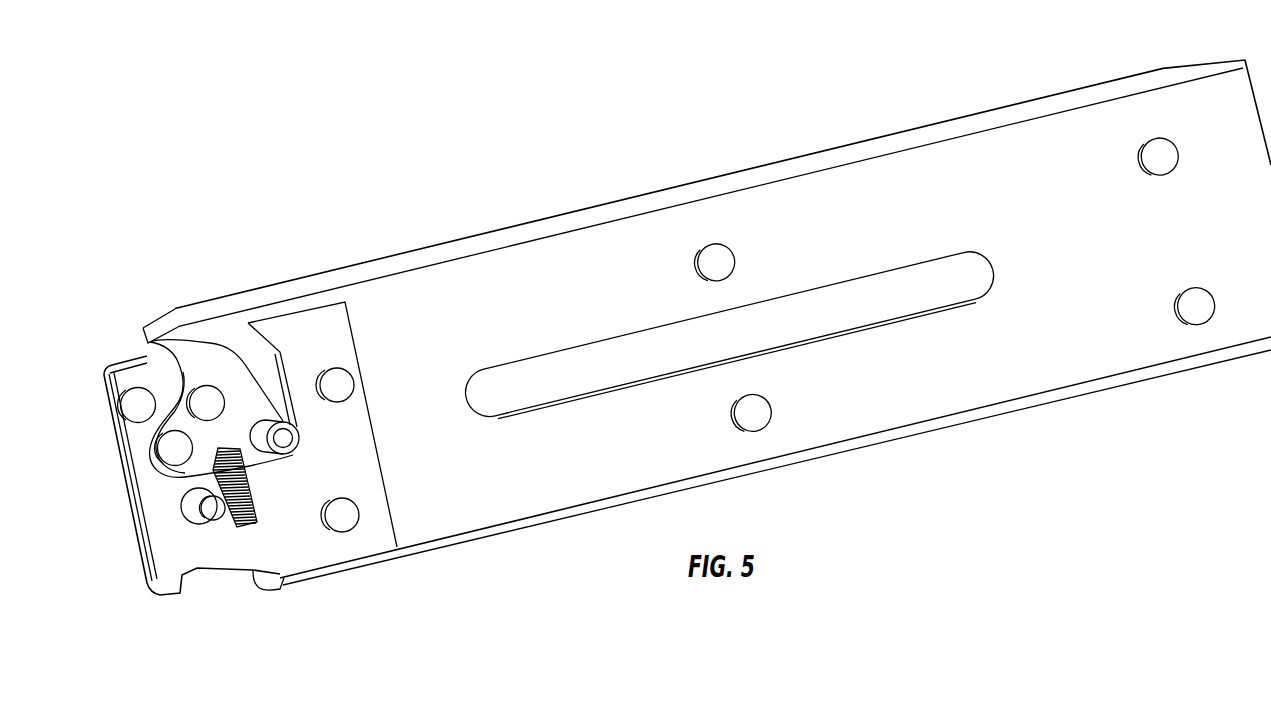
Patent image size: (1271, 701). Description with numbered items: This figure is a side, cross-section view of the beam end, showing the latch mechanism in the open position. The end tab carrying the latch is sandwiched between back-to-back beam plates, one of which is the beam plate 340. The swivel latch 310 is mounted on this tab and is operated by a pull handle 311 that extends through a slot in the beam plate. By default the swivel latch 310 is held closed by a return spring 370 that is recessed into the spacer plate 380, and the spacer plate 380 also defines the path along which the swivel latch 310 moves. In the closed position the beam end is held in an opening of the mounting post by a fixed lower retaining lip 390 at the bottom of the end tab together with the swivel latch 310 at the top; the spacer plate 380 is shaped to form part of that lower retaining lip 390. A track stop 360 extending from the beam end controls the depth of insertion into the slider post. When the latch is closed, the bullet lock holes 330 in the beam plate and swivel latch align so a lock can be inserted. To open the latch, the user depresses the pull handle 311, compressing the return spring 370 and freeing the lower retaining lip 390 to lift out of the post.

The beam plate 340 is at (908, 131).
The swivel latch 310 is at (208, 383).
The pull handle 311 is at (293, 455).
The bullet lock holes 330 is at (181, 341).
The track stop 360 is at (215, 527).
The return spring 370 is at (247, 523).
The spacer plate 380 is at (152, 531).
The lower retaining lip 390 is at (172, 597).